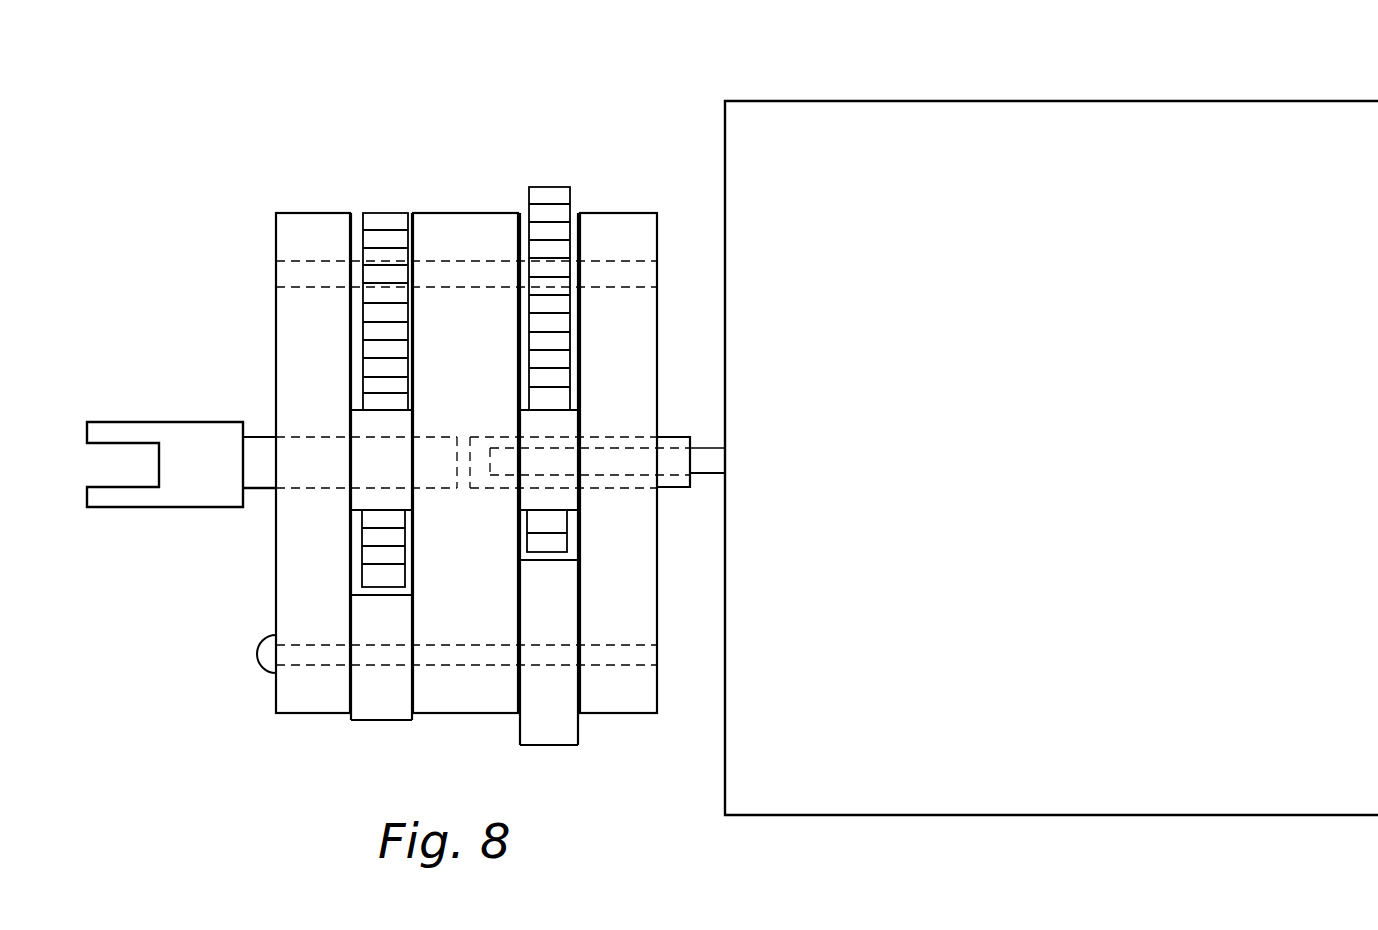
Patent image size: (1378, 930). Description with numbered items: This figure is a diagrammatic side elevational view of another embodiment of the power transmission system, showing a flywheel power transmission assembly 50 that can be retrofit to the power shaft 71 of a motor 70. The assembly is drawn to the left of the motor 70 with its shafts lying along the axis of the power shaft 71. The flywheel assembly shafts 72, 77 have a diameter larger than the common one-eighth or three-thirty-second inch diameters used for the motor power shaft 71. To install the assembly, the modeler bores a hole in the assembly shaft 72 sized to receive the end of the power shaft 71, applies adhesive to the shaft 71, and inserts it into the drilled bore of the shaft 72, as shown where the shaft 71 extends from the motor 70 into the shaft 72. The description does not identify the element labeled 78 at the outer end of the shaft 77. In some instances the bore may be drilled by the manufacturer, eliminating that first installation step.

The flywheel power transmission assembly 50 is at (430, 128).
The motor 70 is at (1192, 132).
The power shaft 71 is at (710, 460).
The assembly shaft 72 is at (482, 435).
The assembly shaft 77 is at (260, 447).
The forked coupling member 78 is at (187, 440).